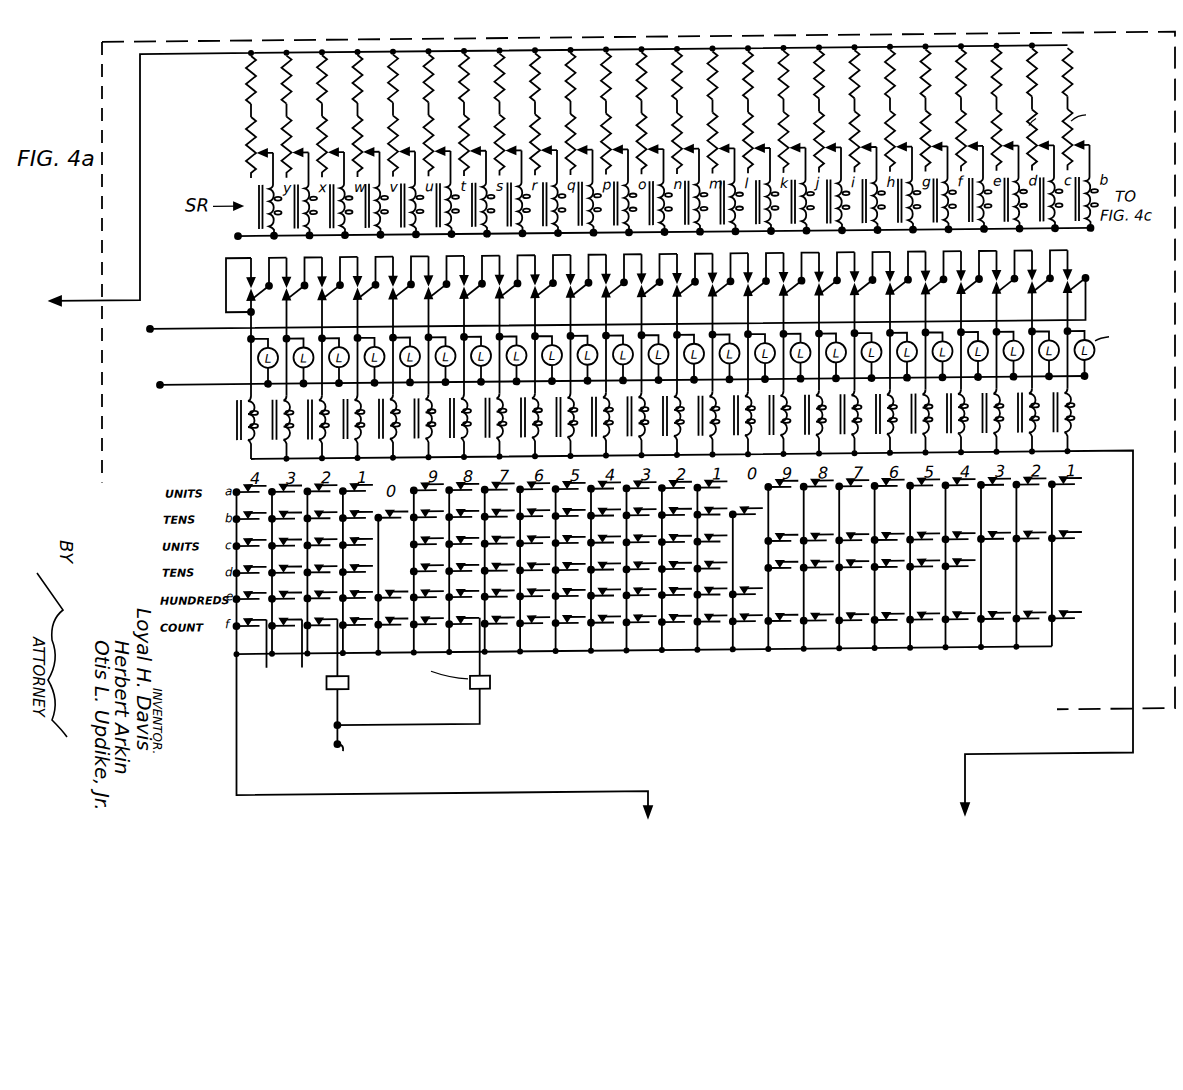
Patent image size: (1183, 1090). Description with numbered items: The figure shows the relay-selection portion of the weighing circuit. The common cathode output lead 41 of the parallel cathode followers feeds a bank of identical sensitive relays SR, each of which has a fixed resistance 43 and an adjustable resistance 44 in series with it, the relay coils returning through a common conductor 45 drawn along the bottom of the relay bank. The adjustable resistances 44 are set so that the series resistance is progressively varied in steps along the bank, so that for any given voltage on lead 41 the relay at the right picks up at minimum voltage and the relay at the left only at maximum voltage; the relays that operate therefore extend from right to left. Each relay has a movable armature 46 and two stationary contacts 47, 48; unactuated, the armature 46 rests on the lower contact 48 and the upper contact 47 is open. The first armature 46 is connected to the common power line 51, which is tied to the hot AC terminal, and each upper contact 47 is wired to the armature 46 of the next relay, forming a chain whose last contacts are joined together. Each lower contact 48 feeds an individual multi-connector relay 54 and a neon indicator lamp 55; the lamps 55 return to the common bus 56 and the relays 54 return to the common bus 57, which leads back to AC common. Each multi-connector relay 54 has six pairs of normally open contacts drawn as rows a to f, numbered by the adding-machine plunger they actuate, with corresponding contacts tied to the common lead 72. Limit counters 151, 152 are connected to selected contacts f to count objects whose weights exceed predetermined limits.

The output lead 41 is at (147, 57).
The fixed resistance 43 is at (247, 93).
The adjustable resistance 44 is at (246, 147).
The common conductor 45 is at (236, 237).
The movable armature 46 is at (1106, 284).
The upper stationary contact 47 is at (249, 282).
The lower stationary contact 48 is at (249, 301).
The common power line 51 is at (177, 330).
The multi-connector relay 54 is at (233, 410).
The neon indicator lamp 55 is at (236, 362).
The common bus 56 is at (168, 383).
The common bus 57 is at (430, 461).
The common lead 72 is at (288, 659).
The limit counter 151 is at (326, 686).
The limit counter 152 is at (492, 683).